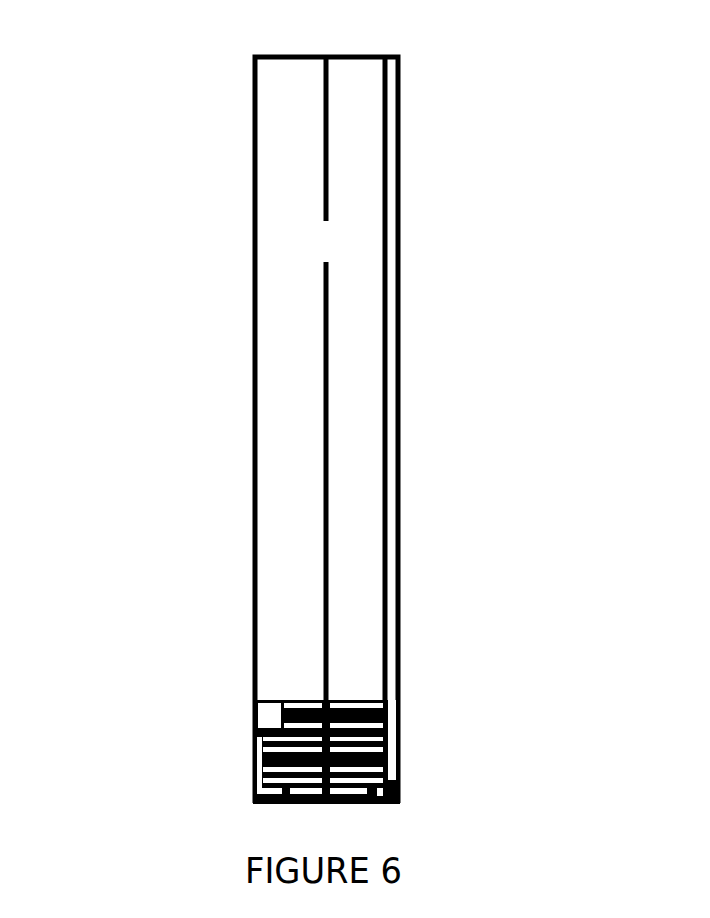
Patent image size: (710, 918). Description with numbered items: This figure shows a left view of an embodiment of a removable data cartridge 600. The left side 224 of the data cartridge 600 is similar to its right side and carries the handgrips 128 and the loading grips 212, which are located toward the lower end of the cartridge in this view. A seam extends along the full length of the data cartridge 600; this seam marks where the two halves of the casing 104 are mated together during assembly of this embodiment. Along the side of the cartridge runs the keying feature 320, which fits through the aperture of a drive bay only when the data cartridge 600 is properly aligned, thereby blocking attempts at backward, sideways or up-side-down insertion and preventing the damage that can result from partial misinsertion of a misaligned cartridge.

The data cartridge 600 is at (350, 417).
The casing 104 is at (243, 215).
The left side 224 is at (350, 255).
The keying feature 320 is at (398, 340).
The loading grips 212 is at (257, 712).
The handgrips 128 is at (385, 742).